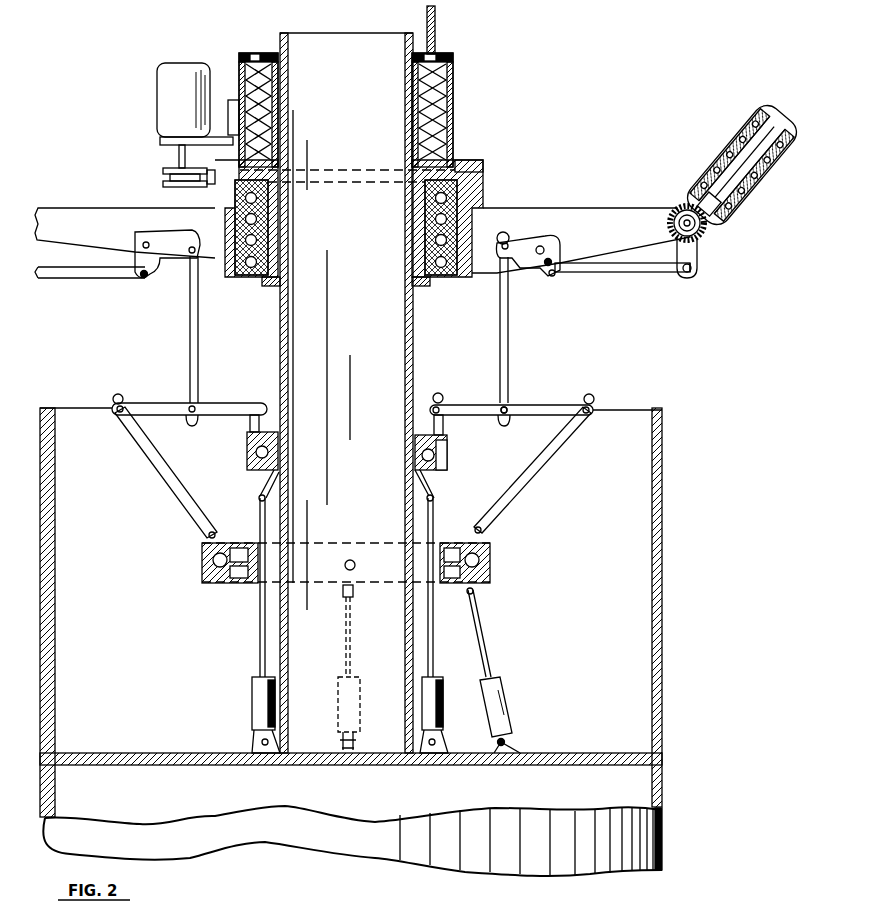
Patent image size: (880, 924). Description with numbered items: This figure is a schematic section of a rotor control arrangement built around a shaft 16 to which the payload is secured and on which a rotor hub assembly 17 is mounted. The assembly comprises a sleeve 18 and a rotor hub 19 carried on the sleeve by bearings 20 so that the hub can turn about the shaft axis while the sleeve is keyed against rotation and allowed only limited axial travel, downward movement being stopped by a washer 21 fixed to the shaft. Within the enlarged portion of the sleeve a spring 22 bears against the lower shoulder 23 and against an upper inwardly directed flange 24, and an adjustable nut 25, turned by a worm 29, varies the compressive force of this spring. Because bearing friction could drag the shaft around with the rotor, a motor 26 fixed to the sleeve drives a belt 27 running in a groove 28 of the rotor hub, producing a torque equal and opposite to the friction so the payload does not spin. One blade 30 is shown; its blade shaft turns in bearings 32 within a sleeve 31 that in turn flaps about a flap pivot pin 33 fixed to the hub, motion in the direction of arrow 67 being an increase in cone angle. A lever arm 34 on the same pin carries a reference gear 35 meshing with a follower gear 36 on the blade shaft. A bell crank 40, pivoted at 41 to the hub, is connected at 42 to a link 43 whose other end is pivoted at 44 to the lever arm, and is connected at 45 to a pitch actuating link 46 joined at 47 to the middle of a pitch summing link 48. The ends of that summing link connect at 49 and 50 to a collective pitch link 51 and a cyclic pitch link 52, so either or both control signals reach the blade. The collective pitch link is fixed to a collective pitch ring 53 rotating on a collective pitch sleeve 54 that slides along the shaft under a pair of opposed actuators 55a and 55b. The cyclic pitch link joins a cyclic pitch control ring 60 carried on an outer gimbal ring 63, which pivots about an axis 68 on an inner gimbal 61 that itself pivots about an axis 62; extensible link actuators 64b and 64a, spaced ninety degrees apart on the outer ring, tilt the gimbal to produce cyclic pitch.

The shaft 16 is at (385, 360).
The rotor hub assembly 17 is at (480, 134).
The sleeve 18 is at (453, 80).
The rotor hub 19 is at (485, 188).
The bearings 20 is at (424, 203).
The washer 21 is at (412, 284).
The spring 22 is at (346, 393).
The lower shoulder 23 is at (412, 150).
The upper inwardly directed flange 24 is at (450, 55).
The adjustable nut 25 is at (272, 52).
The motor 26 is at (165, 95).
The belt 27 is at (165, 176).
The groove 28 is at (468, 172).
The worm 29 is at (437, 20).
The blade 30 is at (768, 128).
The sleeve 31 is at (750, 200).
The bearings 32 is at (766, 172).
The flap pivot pin 33 is at (695, 246).
The lever arm 34 is at (698, 268).
The reference gear 35 is at (700, 237).
The follower gear 36 is at (705, 226).
The bell crank 40 is at (178, 254).
The pivotal mounting 41 is at (545, 246).
The pivotal connection 42 is at (552, 276).
The link 43 is at (110, 270).
The pivot 44 is at (690, 274).
The pivotal connection 45 is at (506, 240).
The pitch actuating link 46 is at (197, 316).
The pivotal connection 47 is at (507, 406).
The pitch summing link 48 is at (218, 408).
The pivotal connection 49 is at (440, 402).
The pivotal connection 50 is at (590, 400).
The collective pitch link 51 is at (250, 433).
The cyclic pitch link 52 is at (177, 490).
The collective pitch ring 53 is at (447, 458).
The collective pitch sleeve 54 is at (415, 452).
The collective pitch extensible link actuator 55a is at (258, 705).
The collective pitch extensible link actuator 55b is at (462, 698).
The cyclic pitch control ring 60 is at (490, 560).
The inner gimbal 61 is at (246, 584).
The axis 62 is at (457, 586).
The outer gimbal ring 63 is at (222, 584).
The extensible link actuator 64a is at (492, 665).
The extensible link actuator 64b is at (350, 650).
The arrow 67 is at (693, 153).
The axis 68 is at (352, 559).